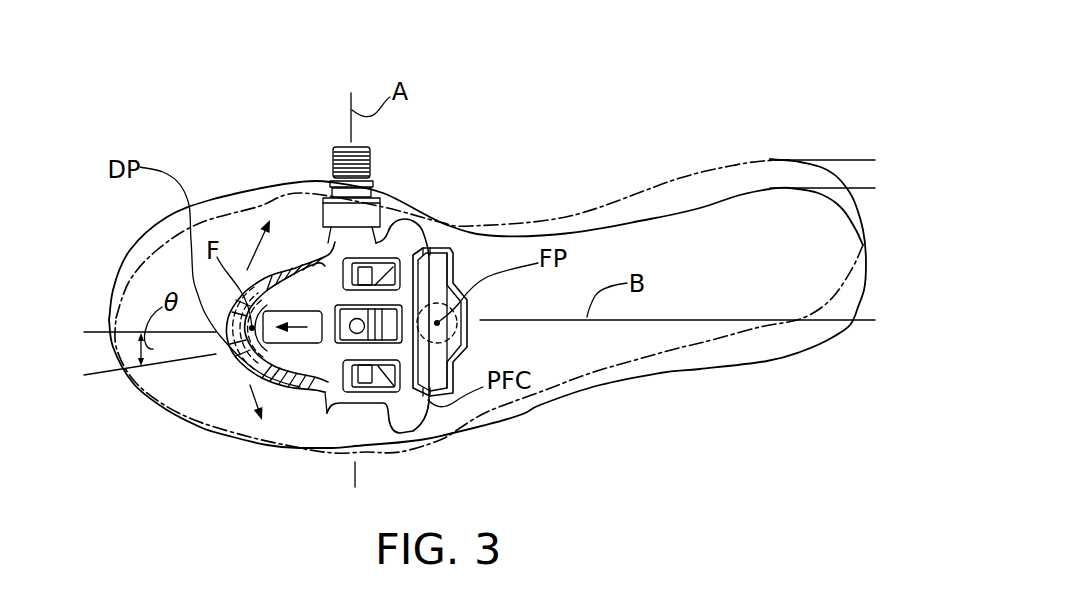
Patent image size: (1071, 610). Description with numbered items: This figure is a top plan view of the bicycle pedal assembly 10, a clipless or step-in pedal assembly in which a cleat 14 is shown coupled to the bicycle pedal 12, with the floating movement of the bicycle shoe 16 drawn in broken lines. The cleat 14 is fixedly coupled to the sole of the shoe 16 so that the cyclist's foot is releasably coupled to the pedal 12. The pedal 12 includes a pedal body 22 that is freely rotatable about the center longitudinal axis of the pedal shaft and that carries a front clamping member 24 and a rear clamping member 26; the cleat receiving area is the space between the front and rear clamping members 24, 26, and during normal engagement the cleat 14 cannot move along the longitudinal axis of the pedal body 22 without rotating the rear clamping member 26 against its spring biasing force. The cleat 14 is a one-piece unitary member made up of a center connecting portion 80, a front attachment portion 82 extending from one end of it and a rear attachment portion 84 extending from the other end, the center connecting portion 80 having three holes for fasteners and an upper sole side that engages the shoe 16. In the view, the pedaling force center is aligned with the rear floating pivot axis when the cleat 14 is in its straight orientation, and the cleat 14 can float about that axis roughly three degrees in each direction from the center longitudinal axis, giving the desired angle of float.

The bicycle pedal assembly 10 is at (448, 152).
The bicycle pedal 12 is at (298, 250).
The cleat 14 is at (433, 237).
The bicycle shoe 16 is at (212, 194).
The pedal body 22 is at (293, 383).
The front clamping member 24 is at (238, 334).
The rear clamping member 26 is at (467, 325).
The center connecting portion 80 is at (323, 392).
The front attachment portion 82 is at (226, 369).
The rear attachment portion 84 is at (432, 413).